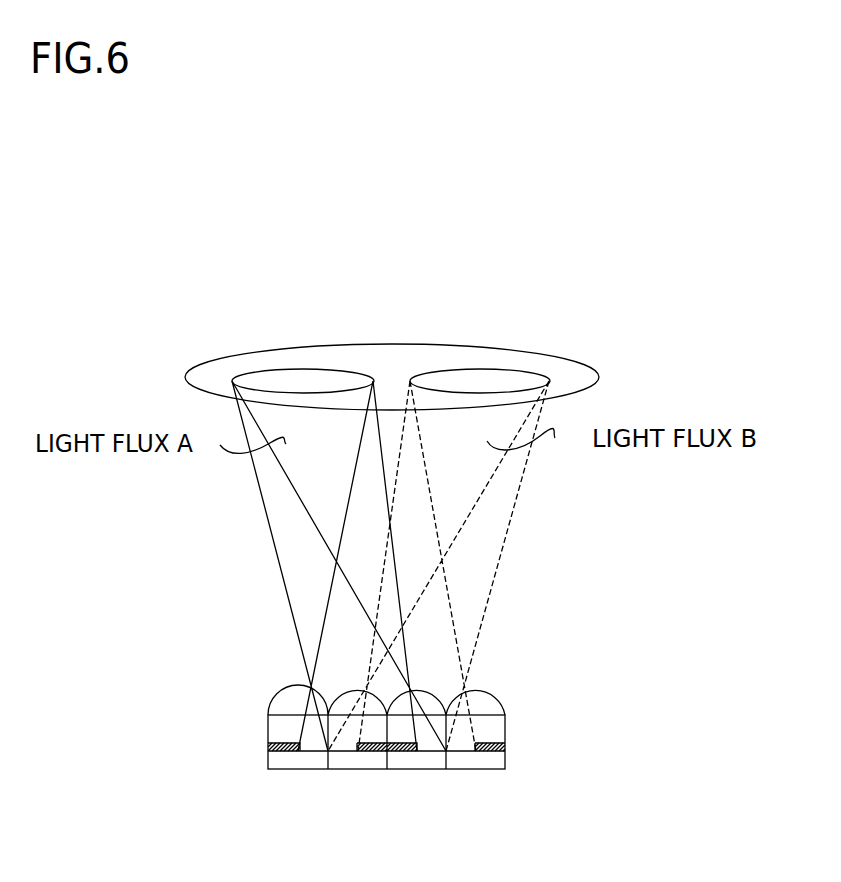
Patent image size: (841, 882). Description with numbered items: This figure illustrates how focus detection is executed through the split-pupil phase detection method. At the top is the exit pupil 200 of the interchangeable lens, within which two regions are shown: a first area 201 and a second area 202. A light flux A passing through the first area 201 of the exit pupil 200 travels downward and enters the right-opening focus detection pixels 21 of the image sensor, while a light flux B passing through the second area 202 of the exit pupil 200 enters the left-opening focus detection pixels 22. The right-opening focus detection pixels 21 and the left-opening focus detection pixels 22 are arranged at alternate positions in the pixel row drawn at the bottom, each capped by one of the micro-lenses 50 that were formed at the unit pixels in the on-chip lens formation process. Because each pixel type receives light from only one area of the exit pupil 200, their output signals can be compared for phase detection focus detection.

The exit pupil 200 is at (558, 355).
The first area 201 is at (306, 393).
The second area 202 is at (453, 393).
The micro-lenses 50 is at (497, 695).
The right-opening focus detection pixels 21 is at (298, 769).
The left-opening focus detection pixels 22 is at (358, 769).